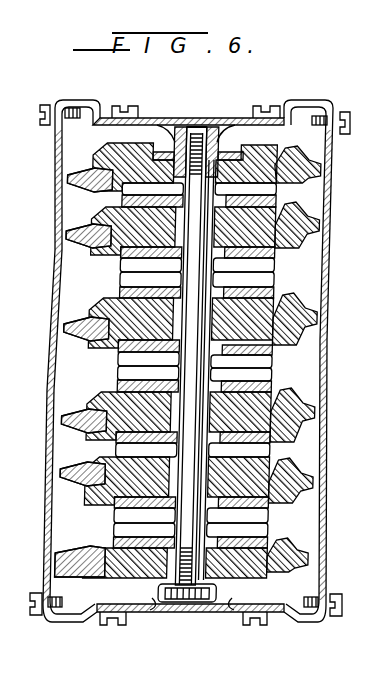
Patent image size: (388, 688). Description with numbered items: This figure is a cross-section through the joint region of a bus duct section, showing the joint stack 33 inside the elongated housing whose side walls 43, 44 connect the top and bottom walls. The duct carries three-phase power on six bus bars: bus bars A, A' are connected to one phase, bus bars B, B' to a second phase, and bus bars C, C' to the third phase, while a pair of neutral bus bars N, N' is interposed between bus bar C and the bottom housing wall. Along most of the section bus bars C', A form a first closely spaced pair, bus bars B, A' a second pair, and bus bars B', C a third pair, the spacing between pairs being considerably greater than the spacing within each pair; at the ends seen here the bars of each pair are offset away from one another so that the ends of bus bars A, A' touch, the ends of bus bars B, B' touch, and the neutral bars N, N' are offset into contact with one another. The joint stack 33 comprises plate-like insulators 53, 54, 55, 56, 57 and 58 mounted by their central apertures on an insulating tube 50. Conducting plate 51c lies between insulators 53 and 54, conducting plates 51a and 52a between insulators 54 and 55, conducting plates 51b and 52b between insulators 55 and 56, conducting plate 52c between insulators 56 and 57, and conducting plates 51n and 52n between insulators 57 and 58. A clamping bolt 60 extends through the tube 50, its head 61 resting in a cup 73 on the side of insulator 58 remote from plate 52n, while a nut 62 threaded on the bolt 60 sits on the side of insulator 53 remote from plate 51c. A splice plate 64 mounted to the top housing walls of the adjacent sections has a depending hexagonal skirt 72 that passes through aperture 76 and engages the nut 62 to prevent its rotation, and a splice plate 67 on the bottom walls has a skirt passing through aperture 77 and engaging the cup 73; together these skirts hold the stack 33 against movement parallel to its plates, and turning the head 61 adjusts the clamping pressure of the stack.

The joint stack 33 is at (296, 300).
The side wall 43 is at (49, 389).
The side wall 44 is at (329, 366).
The insulating tube 50 is at (268, 522).
The conducting plate 51a is at (100, 258).
The conducting plate 51b is at (100, 345).
The conducting plate 51c is at (100, 188).
The conducting plate 51n is at (112, 508).
The conducting plate 52a is at (120, 272).
The conducting plate 52b is at (118, 370).
The conducting plate 52c is at (118, 448).
The conducting plate 52n is at (106, 573).
The plate-like insulator 53 is at (88, 158).
The plate-like insulator 54 is at (92, 213).
The plate-like insulator 55 is at (96, 308).
The plate-like insulator 56 is at (74, 423).
The plate-like insulator 57 is at (86, 483).
The plate-like insulator 58 is at (86, 567).
The clamping bolt 60 is at (196, 126).
The head 61 is at (194, 603).
The nut 62 is at (211, 133).
The splice plate 64 is at (250, 117).
The splice plate 67 is at (104, 626).
The depending hexagonal skirt 72 is at (160, 150).
The cup 73 is at (162, 604).
The aperture 76 is at (163, 122).
The aperture 77 is at (224, 620).
The bus bar A is at (266, 233).
The bus bar A' is at (258, 271).
The bus bar B is at (257, 359).
The bus bar B' is at (257, 376).
The bus bar C is at (262, 419).
The bus bar C' is at (268, 170).
The neutral bus bar N is at (274, 527).
The neutral bus bar N' is at (258, 540).